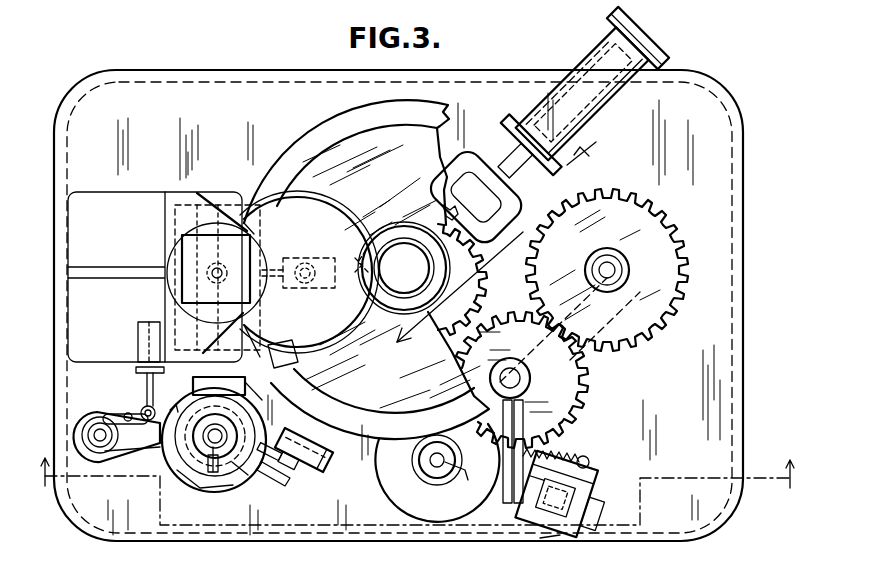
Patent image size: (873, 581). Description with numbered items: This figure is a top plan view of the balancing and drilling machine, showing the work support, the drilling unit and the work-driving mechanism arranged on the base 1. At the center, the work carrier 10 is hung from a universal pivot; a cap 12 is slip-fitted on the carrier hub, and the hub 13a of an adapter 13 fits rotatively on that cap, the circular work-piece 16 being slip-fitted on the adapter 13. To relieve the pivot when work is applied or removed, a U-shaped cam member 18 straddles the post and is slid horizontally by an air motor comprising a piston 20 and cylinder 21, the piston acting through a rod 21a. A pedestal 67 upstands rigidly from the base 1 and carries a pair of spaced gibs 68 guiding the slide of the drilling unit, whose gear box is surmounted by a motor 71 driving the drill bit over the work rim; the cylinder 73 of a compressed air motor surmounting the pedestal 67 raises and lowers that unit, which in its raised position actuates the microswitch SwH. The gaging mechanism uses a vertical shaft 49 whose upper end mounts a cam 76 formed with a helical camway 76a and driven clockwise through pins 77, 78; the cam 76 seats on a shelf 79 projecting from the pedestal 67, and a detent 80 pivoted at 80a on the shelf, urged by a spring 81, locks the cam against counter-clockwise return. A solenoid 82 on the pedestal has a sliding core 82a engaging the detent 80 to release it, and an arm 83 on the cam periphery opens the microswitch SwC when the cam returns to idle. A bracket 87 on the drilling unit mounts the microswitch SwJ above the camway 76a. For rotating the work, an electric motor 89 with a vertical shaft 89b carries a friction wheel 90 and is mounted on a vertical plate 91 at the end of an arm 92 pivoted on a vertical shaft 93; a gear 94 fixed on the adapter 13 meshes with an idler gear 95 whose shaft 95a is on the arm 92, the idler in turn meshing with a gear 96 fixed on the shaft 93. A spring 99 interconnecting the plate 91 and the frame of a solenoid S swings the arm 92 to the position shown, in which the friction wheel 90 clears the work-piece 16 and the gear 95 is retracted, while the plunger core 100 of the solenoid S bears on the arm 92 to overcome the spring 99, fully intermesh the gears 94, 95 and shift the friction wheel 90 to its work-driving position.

The base 1 is at (222, 70).
The work carrier 10 is at (499, 250).
The cap 12 is at (394, 274).
The adapter 13 is at (445, 330).
The hub of adapter 13a is at (456, 221).
The circular work-piece 16 is at (299, 142).
The U-shaped cam member 18 is at (497, 226).
The piston 20 is at (610, 48).
The cylinder 21 is at (588, 62).
The rod 21a is at (512, 150).
The vertical shaft 49 is at (218, 434).
The pedestal 67 is at (163, 223).
The gibs 68 is at (222, 192).
The motor 71 is at (287, 248).
The cylinder of compressed air motor 73 is at (172, 297).
The cam 76 is at (195, 488).
The helical camway 76a is at (240, 485).
The pin 77 is at (178, 470).
The pin 78 is at (224, 472).
The shelf 79 is at (76, 430).
The detent 80 is at (150, 458).
The pivot of detent 80a is at (104, 456).
The spring 81 is at (110, 422).
The solenoid 82 is at (137, 340).
The sliding core 82a is at (145, 397).
The arm 83 is at (282, 478).
The bracket 87 is at (296, 364).
The electric motor 89 is at (435, 500).
The vertical shaft 89b is at (458, 466).
The friction wheel 90 is at (428, 468).
The vertical plate 91 is at (504, 490).
The arm 92 is at (603, 318).
The vertical shaft 93 is at (612, 266).
The gear 94 is at (486, 286).
The idler gear 95 is at (539, 402).
The shaft of idler gear 95a is at (518, 364).
The gear 96 is at (552, 255).
The spring 99 is at (578, 455).
The plunger core 100 is at (546, 530).
The solenoid S is at (598, 490).
The microswitch SwH is at (320, 290).
The microswitch SwJ is at (219, 386).
The microswitch SwC is at (314, 453).